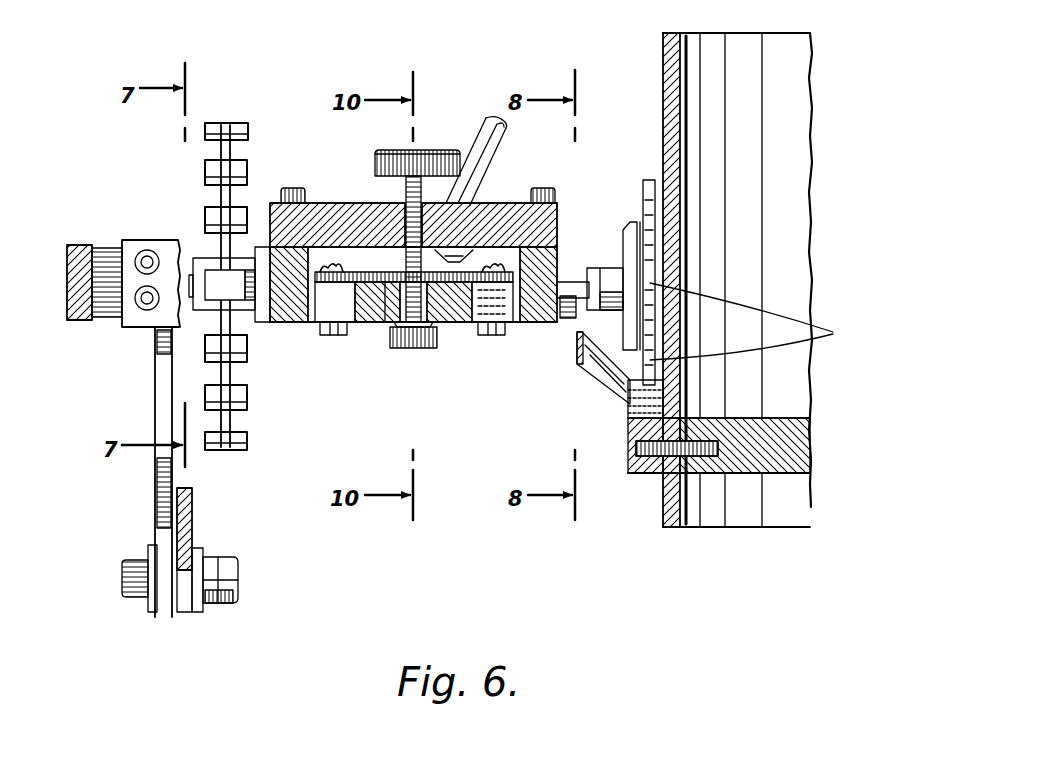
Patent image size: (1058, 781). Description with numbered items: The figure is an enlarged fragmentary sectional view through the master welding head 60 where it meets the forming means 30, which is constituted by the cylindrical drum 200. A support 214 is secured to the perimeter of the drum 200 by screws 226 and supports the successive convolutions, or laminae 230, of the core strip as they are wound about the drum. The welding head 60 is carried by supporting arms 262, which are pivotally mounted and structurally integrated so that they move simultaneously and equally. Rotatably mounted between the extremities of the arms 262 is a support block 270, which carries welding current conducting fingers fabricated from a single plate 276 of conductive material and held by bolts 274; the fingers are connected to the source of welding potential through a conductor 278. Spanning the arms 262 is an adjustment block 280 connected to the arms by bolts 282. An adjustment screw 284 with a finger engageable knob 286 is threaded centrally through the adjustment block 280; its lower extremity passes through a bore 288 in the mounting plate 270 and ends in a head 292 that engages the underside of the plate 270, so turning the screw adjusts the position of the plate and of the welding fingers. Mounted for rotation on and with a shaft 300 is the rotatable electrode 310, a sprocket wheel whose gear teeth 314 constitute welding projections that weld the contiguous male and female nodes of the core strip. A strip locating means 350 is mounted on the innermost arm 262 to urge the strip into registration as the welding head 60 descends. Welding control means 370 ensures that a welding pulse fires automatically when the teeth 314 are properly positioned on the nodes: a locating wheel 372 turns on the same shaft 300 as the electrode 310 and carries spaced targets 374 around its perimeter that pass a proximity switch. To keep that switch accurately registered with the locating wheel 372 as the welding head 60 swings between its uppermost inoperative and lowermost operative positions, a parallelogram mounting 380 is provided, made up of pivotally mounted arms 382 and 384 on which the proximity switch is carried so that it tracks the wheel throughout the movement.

The forming means 30 is at (741, 287).
The master welding head 60 is at (120, 487).
The drum 200 is at (668, 45).
The support 214 is at (651, 476).
The screws 226 is at (630, 463).
The laminae 230 is at (640, 398).
The supporting arms 262 is at (290, 322).
The support block 270 is at (360, 322).
The bolts 274 is at (493, 268).
The plate 276 is at (445, 305).
The conductor 278 is at (470, 120).
The adjustment block 280 is at (558, 212).
The bolts 282 is at (292, 188).
The adjustment screw 284 is at (405, 192).
The finger engageable knob 286 is at (402, 152).
The bore 288 is at (383, 303).
The head 292 is at (416, 348).
The shaft 300 is at (626, 268).
The rotatable electrode 310 is at (646, 180).
The gear teeth 314 is at (759, 321).
The strip locating means 350 is at (580, 378).
The welding control means 370 is at (229, 122).
The locating wheel 372 is at (205, 212).
The targets 374 is at (208, 172).
The parallelogram mounting 380 is at (152, 382).
The arm 382 is at (82, 247).
The arm 384 is at (160, 410).